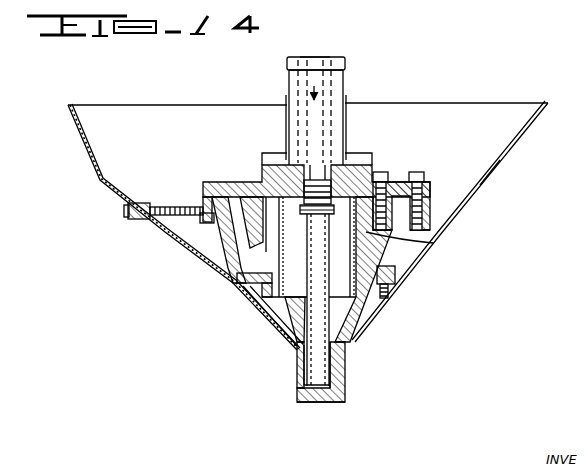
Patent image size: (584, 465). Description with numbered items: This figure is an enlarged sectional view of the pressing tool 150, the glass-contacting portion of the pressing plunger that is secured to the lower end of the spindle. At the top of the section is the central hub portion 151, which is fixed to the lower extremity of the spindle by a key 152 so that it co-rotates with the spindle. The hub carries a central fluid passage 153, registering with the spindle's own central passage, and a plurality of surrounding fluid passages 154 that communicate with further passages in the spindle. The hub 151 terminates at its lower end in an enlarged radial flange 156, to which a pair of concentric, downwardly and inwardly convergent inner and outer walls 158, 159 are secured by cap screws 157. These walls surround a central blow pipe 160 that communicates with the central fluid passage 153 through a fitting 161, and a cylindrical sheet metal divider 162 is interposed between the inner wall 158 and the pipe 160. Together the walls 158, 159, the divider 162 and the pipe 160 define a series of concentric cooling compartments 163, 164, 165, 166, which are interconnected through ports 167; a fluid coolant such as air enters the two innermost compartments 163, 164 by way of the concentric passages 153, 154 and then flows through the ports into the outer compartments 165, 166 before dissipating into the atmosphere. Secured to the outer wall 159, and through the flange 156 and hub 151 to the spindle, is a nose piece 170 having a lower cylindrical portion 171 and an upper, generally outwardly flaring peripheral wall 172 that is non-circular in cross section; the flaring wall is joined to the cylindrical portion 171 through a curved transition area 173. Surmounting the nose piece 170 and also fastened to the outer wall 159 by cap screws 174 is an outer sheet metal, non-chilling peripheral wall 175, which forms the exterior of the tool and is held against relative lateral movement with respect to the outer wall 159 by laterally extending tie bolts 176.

The pressing tool 150 is at (452, 101).
The central hub portion 151 is at (345, 81).
The key 152 is at (348, 97).
The central fluid passage 153 is at (316, 55).
The surrounding fluid passages 154 is at (339, 56).
The radial flange 156 is at (225, 182).
The cap screws 157 is at (427, 172).
The inner wall 158 is at (405, 252).
The outer wall 159 is at (431, 223).
The central blow pipe 160 is at (325, 283).
The fitting 161 is at (320, 178).
The cylindrical sheet metal divider 162 is at (415, 240).
The cooling compartment 163 is at (326, 369).
The cooling compartment 164 is at (259, 318).
The cooling compartment 165 is at (268, 220).
The cooling compartment 166 is at (240, 283).
The ports 167 is at (232, 253).
The nose piece 170 is at (313, 403).
The lower cylindrical portion 171 is at (293, 395).
The upper outwardly flaring peripheral wall 172 is at (375, 328).
The curved transition area 173 is at (318, 356).
The cap screws 174 is at (392, 270).
The outer sheet metal non-chilling peripheral wall 175 is at (478, 190).
The tie bolts 176 is at (184, 207).